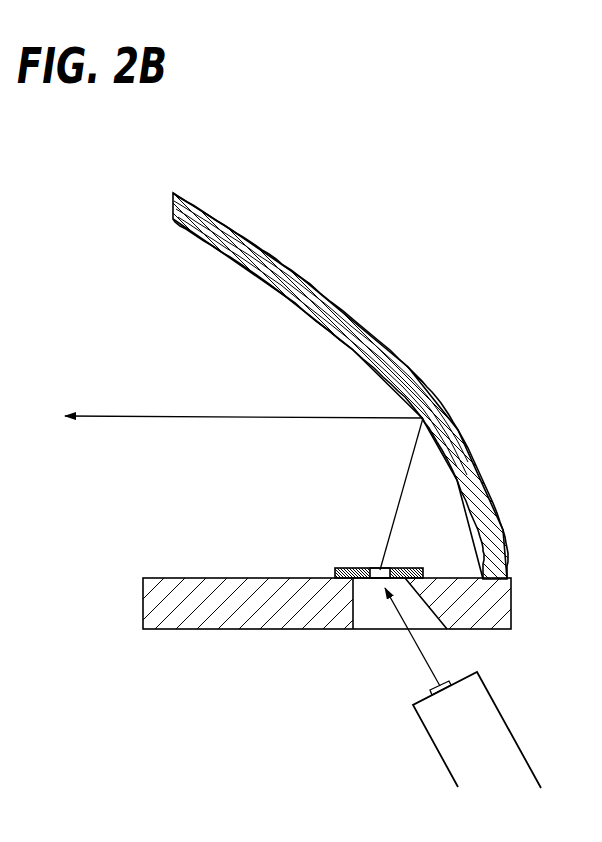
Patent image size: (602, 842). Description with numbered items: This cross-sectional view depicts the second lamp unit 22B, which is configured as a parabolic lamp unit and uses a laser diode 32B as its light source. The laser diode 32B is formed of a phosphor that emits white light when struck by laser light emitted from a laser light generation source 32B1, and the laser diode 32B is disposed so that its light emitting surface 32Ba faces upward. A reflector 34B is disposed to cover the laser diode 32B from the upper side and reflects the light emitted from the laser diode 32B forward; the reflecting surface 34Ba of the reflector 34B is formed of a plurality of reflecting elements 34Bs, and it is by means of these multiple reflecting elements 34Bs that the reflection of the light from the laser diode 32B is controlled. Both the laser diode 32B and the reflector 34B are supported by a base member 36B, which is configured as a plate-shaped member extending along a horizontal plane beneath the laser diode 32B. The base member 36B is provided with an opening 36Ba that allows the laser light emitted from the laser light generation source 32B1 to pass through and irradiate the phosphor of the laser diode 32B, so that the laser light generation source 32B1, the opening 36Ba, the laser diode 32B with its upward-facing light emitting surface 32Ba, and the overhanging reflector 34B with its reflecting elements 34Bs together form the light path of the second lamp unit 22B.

The second lamp unit 22B is at (436, 193).
The reflector 34B is at (408, 367).
The reflecting surface 34Ba is at (232, 260).
The reflecting elements 34Bs is at (352, 350).
The base member 36B is at (207, 630).
The opening 36Ba is at (372, 612).
The laser diode 32B is at (367, 560).
The light emitting surface 32Ba is at (373, 567).
The laser light generation source 32B1 is at (427, 741).